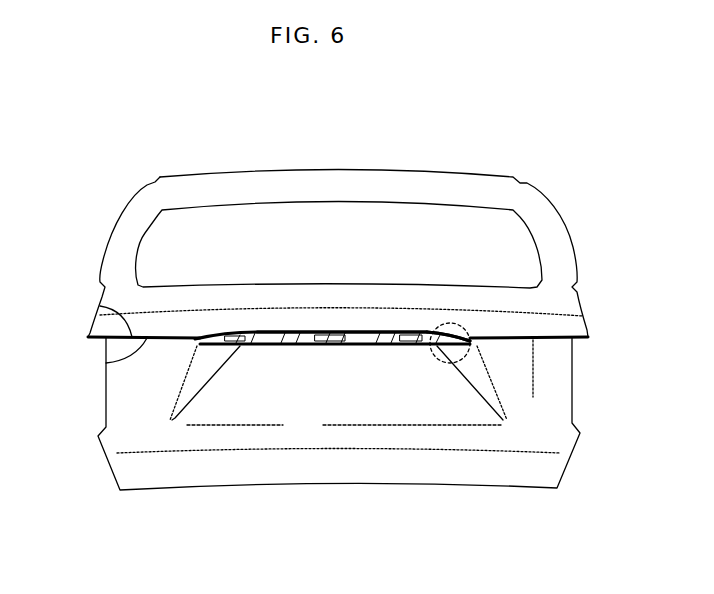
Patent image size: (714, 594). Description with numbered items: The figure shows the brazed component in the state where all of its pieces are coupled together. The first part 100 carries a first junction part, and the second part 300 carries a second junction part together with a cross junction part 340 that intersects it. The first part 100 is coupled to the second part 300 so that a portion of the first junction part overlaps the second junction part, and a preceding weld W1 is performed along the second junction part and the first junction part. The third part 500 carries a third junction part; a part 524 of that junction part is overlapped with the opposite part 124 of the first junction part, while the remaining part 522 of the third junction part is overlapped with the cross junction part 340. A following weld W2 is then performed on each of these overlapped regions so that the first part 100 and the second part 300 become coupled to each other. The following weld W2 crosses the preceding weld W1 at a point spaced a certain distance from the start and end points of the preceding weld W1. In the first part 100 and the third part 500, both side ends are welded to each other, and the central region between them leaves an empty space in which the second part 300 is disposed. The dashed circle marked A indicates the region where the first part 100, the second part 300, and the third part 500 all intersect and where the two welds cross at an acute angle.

The first part 100 is at (484, 157).
The second part 300 is at (282, 330).
The preceding weld W1 is at (328, 332).
The remaining part of the third junction part 522 is at (442, 336).
The part of the third junction part 524 is at (100, 313).
The following weld W2 is at (105, 364).
The third part 500 is at (202, 491).
The cross junction part 340 is at (360, 346).
The region A is at (445, 365).
The opposite part of the first junction part 124 is at (533, 397).